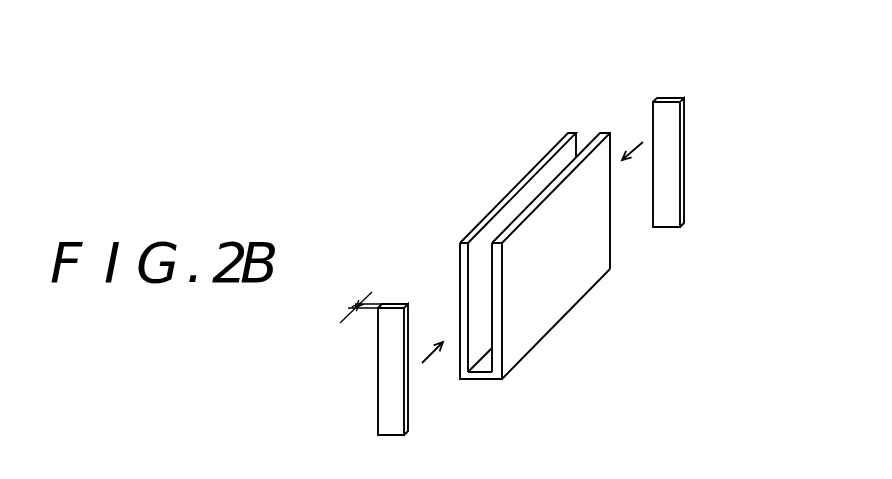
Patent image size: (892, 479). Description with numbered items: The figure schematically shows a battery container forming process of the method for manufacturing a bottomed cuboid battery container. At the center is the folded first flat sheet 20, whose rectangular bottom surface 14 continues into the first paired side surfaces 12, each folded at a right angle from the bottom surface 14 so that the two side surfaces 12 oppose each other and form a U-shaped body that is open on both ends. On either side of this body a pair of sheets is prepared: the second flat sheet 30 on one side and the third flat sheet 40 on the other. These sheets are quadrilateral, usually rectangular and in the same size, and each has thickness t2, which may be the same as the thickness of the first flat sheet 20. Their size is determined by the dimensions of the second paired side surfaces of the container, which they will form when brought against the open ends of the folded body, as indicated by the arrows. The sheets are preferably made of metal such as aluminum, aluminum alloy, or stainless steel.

The first paired side surfaces 12 is at (490, 211).
The bottom surface 14 is at (478, 380).
The first flat sheet 20 is at (580, 125).
The second flat sheet 30 is at (407, 298).
The third flat sheet 40 is at (674, 91).
The thickness t2 is at (351, 307).